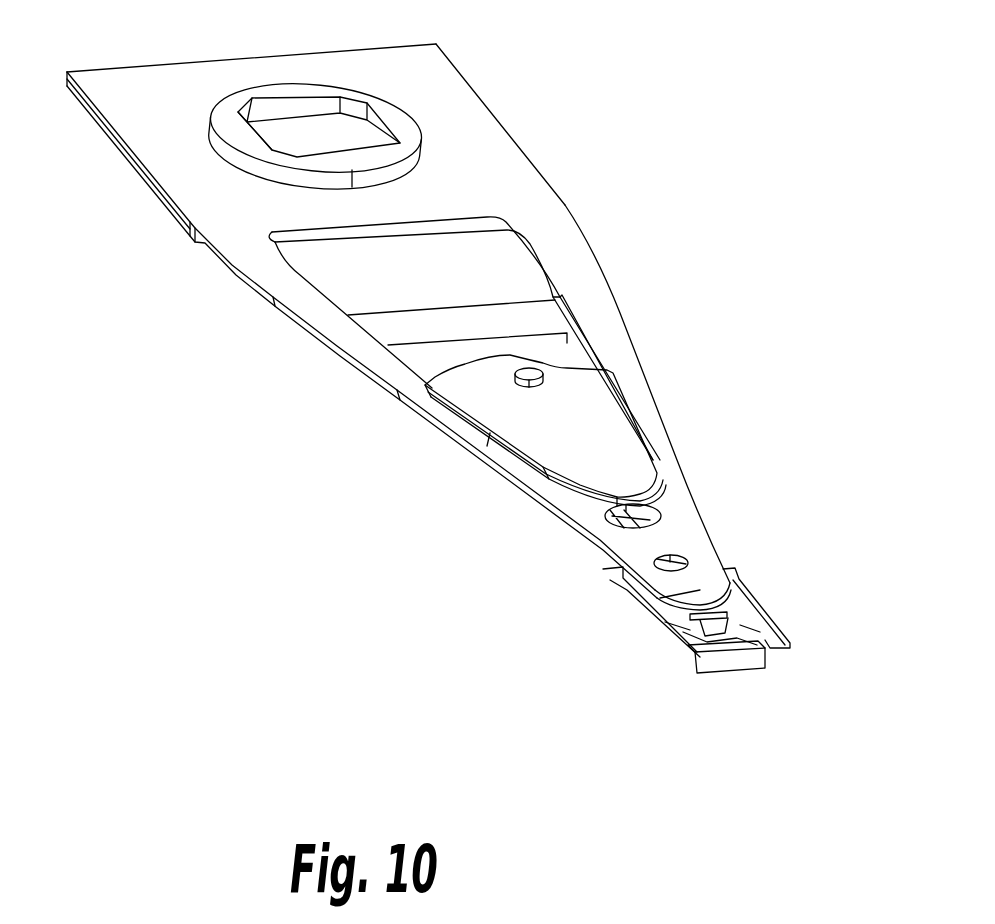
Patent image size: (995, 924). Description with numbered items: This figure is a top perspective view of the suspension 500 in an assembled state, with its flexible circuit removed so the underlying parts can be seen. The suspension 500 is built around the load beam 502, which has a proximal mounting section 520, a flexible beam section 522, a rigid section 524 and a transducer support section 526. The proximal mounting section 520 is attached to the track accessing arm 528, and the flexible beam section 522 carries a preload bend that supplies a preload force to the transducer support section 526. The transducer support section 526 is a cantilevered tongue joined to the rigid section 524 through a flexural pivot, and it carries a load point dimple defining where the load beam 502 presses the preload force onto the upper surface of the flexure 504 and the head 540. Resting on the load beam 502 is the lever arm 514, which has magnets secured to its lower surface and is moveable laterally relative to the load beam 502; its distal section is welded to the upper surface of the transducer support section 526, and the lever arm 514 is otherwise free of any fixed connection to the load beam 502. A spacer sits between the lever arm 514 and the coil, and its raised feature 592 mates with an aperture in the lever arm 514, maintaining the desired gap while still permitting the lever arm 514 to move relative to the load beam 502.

The suspension 500 is at (309, 466).
The load beam 502 is at (582, 220).
The flexure 504 is at (758, 594).
The lever arm 514 is at (652, 436).
The proximal mounting section 520 is at (475, 92).
The flexible beam section 522 is at (605, 270).
The rigid section 524 is at (646, 378).
The transducer support section 526 is at (670, 607).
The track accessing arm 528 is at (110, 138).
The head 540 is at (727, 673).
The raised feature 592 is at (547, 373).